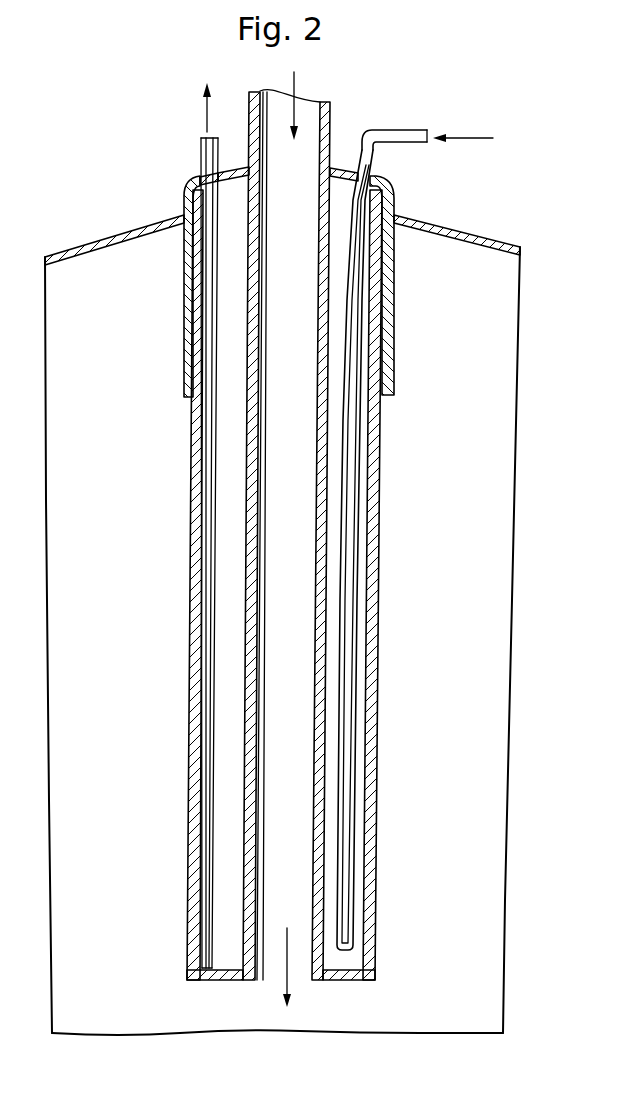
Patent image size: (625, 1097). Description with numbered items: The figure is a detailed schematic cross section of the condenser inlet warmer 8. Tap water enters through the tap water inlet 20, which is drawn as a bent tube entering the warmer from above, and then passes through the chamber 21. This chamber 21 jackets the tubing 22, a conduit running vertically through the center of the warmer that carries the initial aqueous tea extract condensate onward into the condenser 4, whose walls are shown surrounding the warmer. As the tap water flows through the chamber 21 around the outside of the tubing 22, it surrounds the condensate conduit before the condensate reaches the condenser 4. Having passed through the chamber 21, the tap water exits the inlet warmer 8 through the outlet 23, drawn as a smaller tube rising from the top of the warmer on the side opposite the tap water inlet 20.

The condenser 4 is at (460, 228).
The condenser inlet warmer 8 is at (394, 406).
The tap water inlet 20 is at (397, 128).
The chamber 21 is at (360, 538).
The tubing 22 is at (300, 608).
The outlet 23 is at (199, 157).